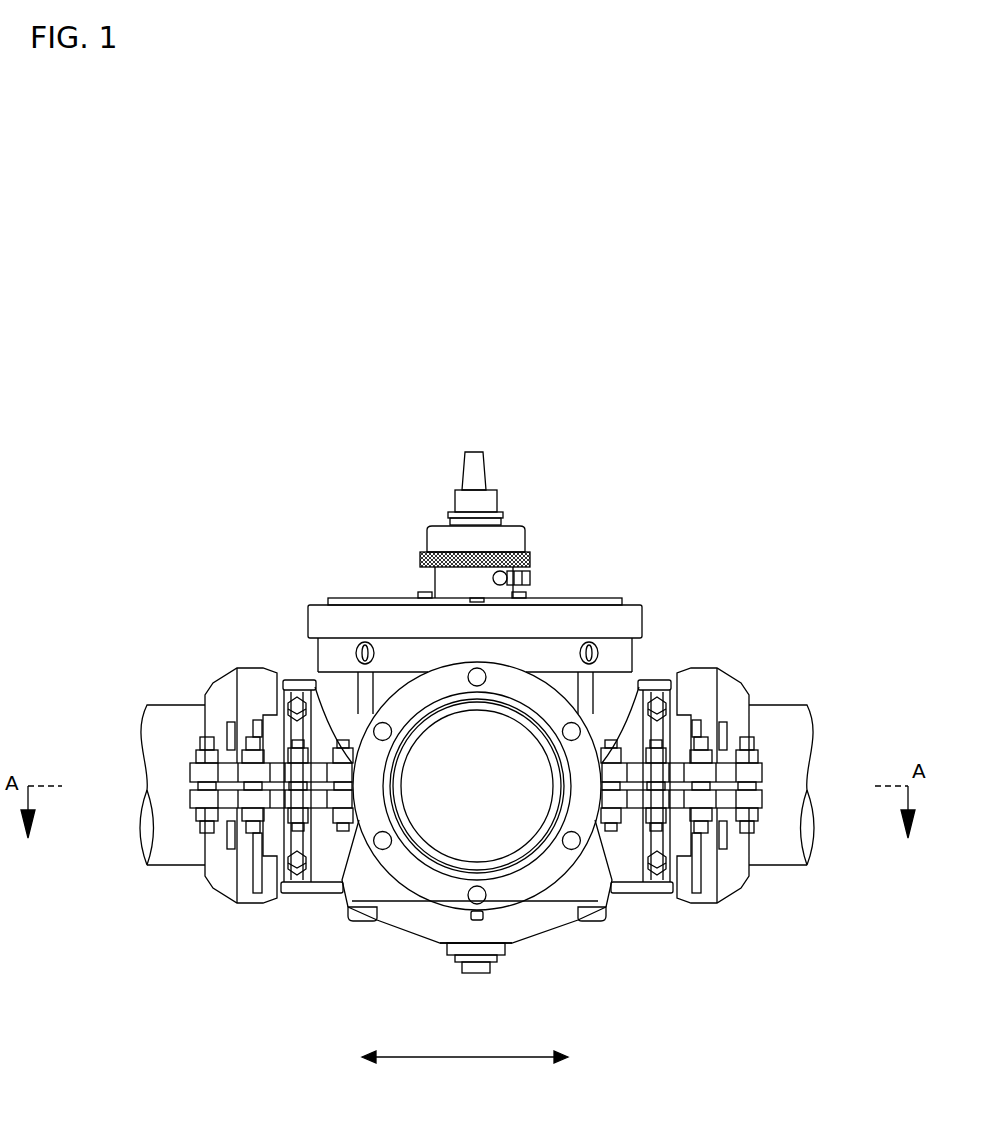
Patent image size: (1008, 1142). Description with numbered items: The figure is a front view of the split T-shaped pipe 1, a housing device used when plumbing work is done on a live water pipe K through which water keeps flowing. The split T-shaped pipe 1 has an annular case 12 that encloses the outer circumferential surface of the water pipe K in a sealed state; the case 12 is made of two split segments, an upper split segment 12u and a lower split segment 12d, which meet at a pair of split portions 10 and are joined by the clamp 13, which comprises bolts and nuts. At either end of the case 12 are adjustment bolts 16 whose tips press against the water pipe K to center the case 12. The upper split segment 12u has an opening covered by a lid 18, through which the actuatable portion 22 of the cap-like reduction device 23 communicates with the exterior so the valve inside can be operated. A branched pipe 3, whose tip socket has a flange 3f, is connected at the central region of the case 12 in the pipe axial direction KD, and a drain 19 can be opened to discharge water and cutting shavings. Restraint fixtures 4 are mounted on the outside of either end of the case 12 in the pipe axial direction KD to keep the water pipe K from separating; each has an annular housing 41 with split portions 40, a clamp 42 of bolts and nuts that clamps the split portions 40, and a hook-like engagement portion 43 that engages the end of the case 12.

The split T-shaped pipe 1 is at (288, 594).
The branched pipe 3 is at (400, 886).
The flange 3f is at (528, 880).
The restraint fixture 4 is at (473, 805).
The split portion 10 is at (362, 787).
The case 12 is at (300, 680).
The upper split segment 12u is at (655, 680).
The lower split segment 12d is at (614, 895).
The clamp 13 is at (323, 862).
The adjustment bolt 16 is at (293, 897).
The lid 18 is at (633, 601).
The drain 19 is at (470, 975).
The actuatable portion 22 is at (467, 467).
The reduction device 23 is at (426, 537).
The split portion 40 is at (178, 777).
The housing 41 is at (222, 668).
The clamp 42 is at (199, 834).
The engagement portion 43 is at (258, 906).
The water pipe K is at (170, 705).
The pipe axial direction KD is at (465, 1074).